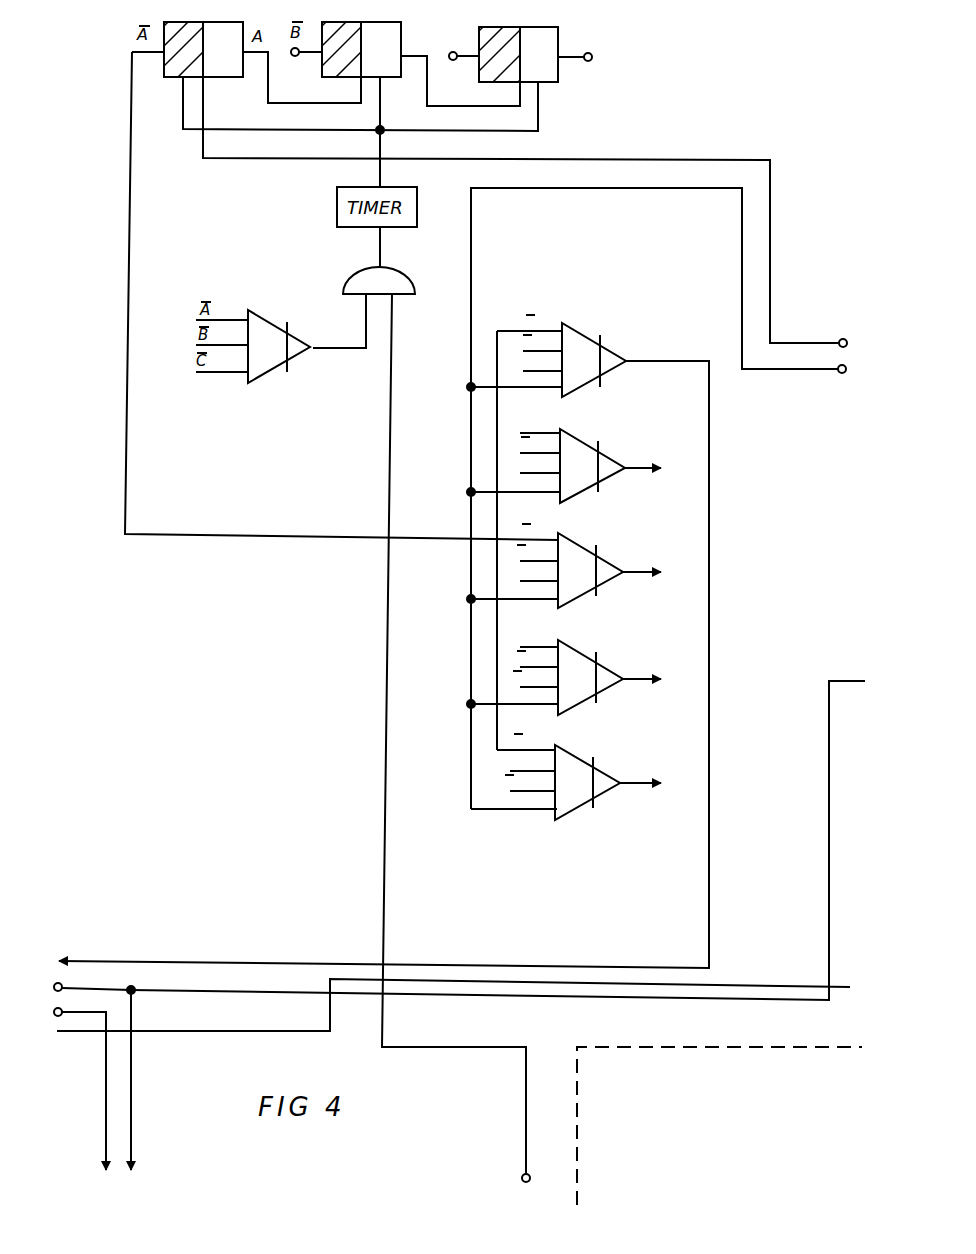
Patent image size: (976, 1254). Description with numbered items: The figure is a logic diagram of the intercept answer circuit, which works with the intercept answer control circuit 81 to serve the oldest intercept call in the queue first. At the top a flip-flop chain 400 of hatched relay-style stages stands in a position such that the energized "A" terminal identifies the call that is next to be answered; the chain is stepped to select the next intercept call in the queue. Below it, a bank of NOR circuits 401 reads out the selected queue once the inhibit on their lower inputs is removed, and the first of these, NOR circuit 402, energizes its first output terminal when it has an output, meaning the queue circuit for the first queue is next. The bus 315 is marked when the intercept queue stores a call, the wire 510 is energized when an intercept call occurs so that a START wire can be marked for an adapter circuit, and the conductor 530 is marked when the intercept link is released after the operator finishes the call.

The flip-flop chain 400 is at (203, 93).
The NOR circuits 401 is at (452, 578).
The NOR circuit 402 is at (603, 373).
The bus 315 is at (62, 1003).
The wire 510 is at (855, 666).
The conductor 530 is at (850, 985).
The intercept answer control circuit 81 is at (719, 1126).